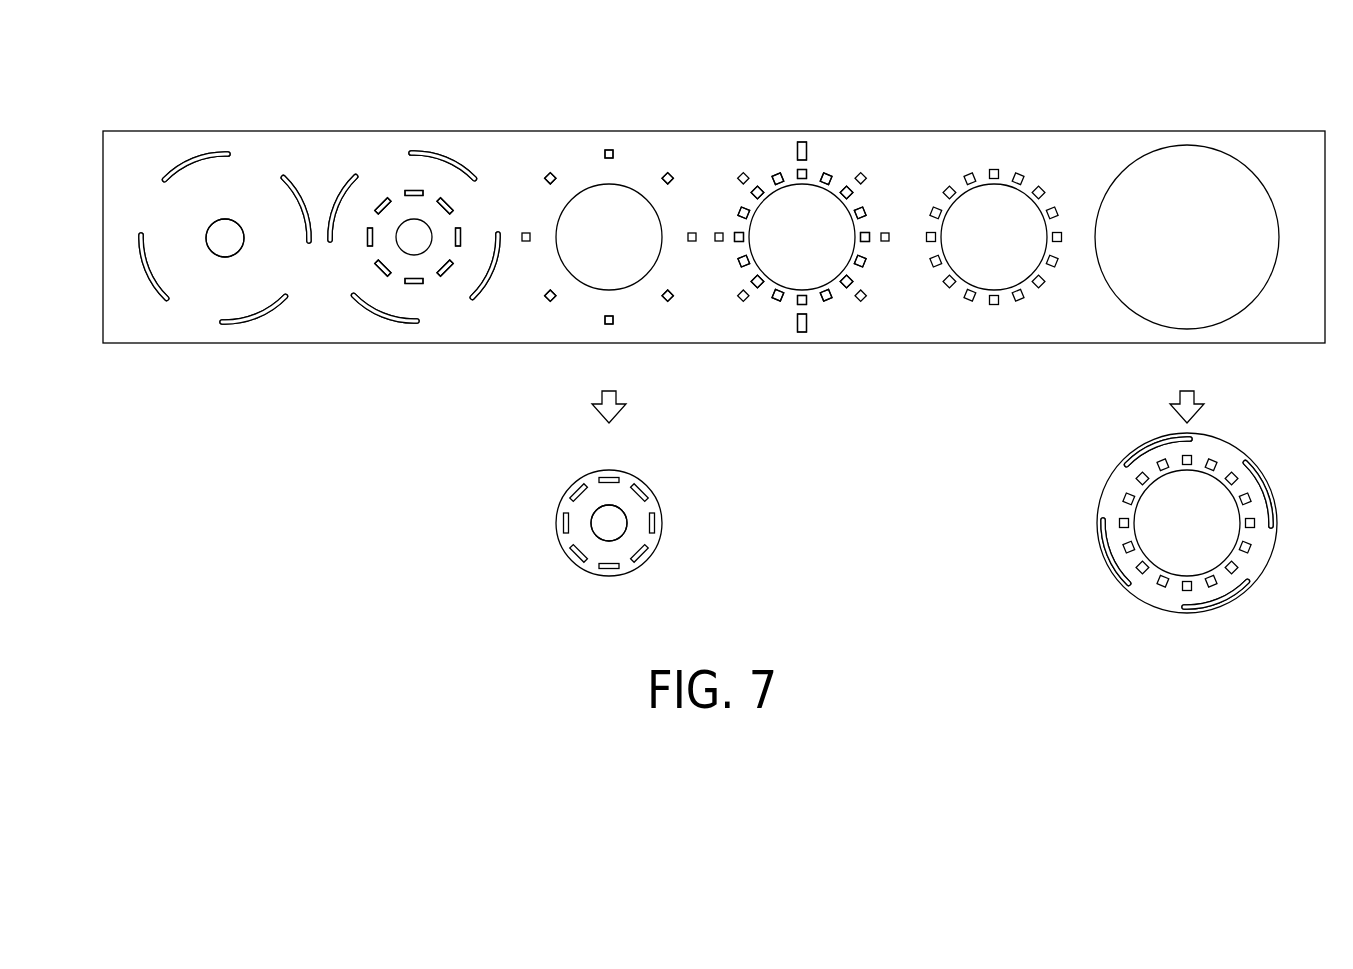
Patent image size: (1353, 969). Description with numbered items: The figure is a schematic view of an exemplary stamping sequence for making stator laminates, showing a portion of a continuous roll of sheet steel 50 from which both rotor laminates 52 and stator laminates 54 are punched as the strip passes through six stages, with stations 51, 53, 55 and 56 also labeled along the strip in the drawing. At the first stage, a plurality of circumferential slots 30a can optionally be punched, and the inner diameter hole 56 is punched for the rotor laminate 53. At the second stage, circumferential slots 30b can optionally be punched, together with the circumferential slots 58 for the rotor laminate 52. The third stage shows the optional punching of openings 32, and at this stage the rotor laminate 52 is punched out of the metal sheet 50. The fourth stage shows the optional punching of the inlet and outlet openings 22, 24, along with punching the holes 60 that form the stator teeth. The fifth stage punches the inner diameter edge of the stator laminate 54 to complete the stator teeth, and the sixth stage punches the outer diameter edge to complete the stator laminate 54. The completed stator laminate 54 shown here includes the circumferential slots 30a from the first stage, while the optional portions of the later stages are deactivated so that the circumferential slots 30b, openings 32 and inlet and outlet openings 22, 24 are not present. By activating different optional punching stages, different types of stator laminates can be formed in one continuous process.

The continuous roll of sheet steel 50 is at (1278, 152).
The first station 51 is at (222, 85).
The rotor laminate 52 is at (414, 85).
The rotor laminate 53 is at (606, 85).
The stator laminate 54 is at (800, 85).
The fifth station 55 is at (992, 85).
The inner diameter hole 56 is at (1184, 85).
The circumferential slots 30a is at (208, 155).
The circumferential slots 30b is at (355, 177).
The circumferential slots 58 is at (415, 190).
The openings 32 is at (606, 150).
The inlet opening 22 is at (797, 148).
The outlet opening 24 is at (802, 333).
The holes 60 is at (827, 175).